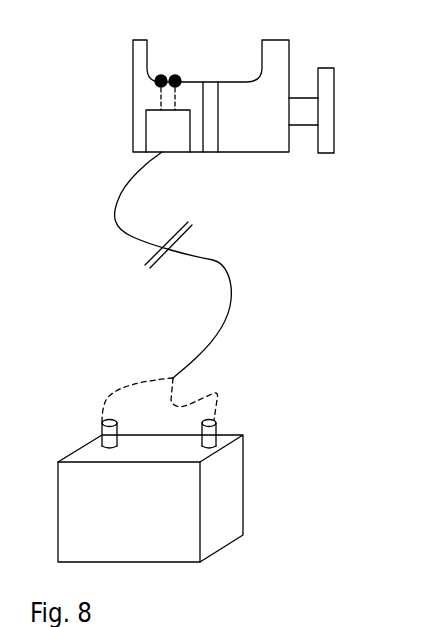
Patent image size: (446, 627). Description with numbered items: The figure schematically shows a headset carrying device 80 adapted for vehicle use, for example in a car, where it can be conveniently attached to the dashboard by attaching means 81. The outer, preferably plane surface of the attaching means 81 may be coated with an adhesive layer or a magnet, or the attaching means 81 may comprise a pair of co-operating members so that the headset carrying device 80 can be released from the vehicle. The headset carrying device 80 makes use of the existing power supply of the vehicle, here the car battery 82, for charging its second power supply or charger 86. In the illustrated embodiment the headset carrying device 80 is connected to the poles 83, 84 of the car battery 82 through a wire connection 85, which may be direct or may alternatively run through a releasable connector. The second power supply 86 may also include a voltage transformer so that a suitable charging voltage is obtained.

The headset carrying device 80 is at (120, 53).
The attaching means 81 is at (347, 97).
The car battery 82 is at (247, 482).
The pole of car battery 83 is at (92, 407).
The pole of car battery 84 is at (230, 405).
The wire connection 85 is at (232, 263).
The second power supply or charger 86 is at (175, 137).